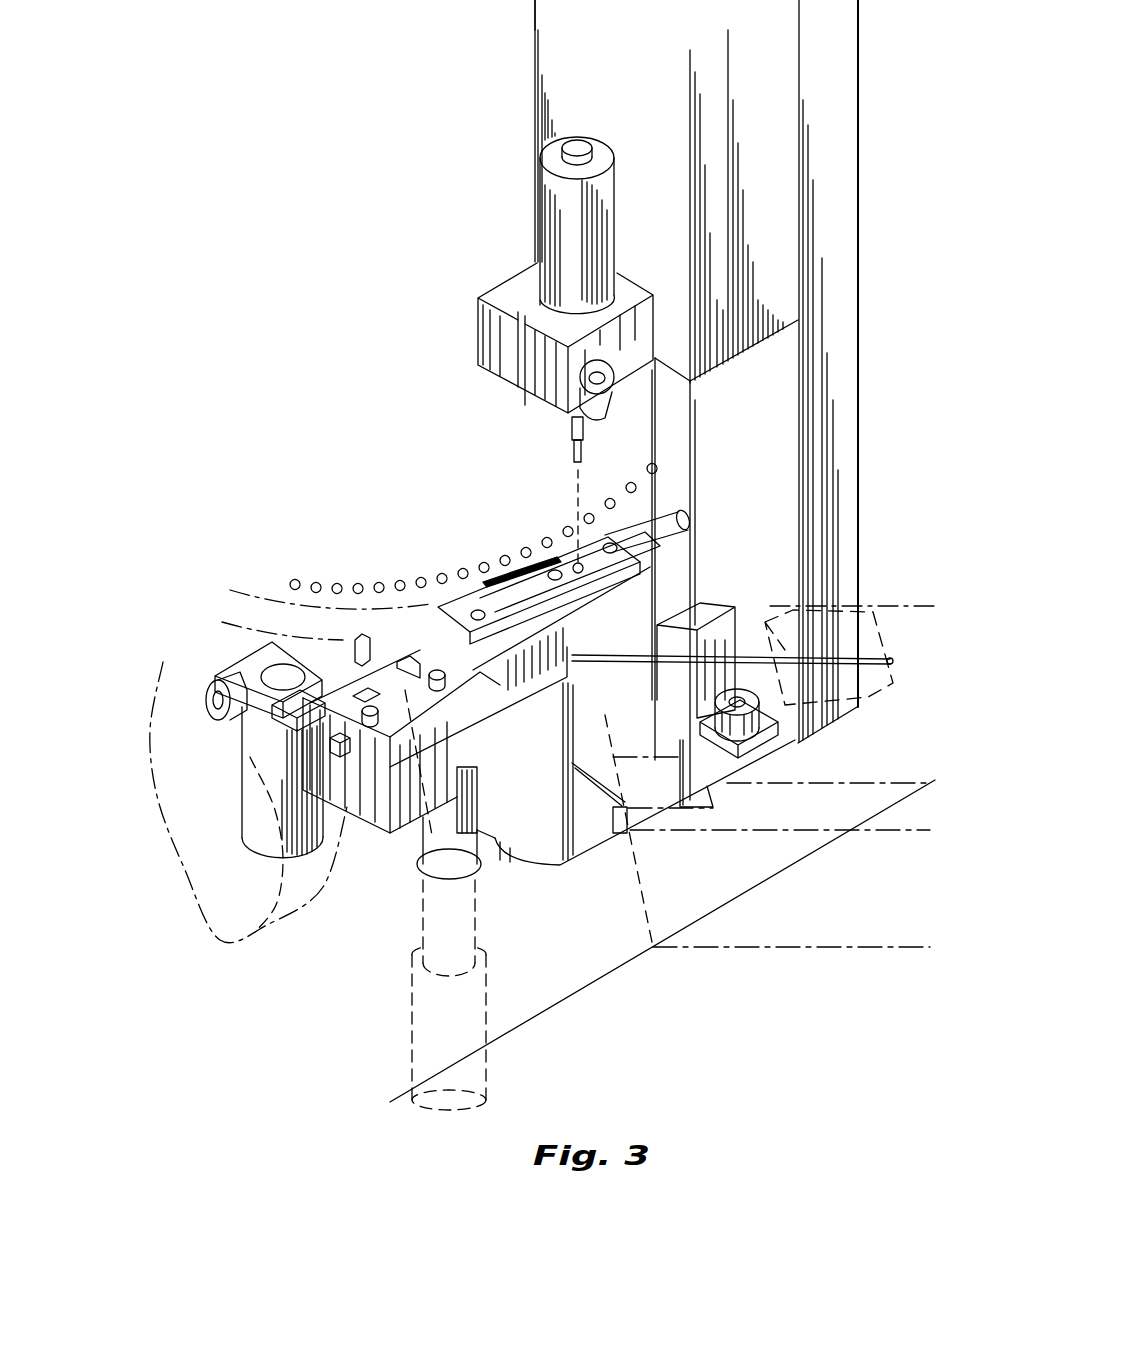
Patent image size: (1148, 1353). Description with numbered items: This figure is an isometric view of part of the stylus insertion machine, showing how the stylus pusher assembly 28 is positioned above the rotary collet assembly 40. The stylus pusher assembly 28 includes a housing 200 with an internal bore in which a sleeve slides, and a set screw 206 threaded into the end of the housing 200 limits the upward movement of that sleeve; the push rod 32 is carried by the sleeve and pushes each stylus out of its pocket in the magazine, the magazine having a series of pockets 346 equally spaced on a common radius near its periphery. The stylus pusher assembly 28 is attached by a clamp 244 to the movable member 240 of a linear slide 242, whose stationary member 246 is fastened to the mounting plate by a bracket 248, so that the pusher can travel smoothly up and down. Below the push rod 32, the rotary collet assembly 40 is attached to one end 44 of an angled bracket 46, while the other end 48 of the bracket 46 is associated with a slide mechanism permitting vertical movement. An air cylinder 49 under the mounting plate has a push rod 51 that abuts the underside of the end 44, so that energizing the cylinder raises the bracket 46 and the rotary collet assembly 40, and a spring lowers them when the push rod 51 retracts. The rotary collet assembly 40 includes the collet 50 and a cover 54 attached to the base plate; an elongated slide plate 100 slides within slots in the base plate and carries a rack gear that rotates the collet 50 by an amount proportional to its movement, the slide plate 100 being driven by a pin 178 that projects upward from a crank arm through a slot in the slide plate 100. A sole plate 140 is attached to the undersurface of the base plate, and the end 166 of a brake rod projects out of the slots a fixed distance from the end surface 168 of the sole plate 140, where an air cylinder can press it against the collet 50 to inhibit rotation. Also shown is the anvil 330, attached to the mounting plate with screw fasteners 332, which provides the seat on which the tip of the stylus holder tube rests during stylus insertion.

The stylus pusher assembly 28 is at (555, 204).
The push rod 32 is at (574, 462).
The rotary collet assembly 40 is at (432, 580).
The end of angled bracket 44 is at (562, 745).
The angled bracket 46 is at (642, 786).
The other end of bracket 48 is at (575, 845).
The air cylinder 49 is at (489, 998).
The collet 50 is at (550, 598).
The push rod 51 is at (427, 838).
The cover 54 is at (480, 660).
The slide plate 100 is at (287, 733).
The sole plate 140 is at (478, 756).
The end of brake rod 166 is at (348, 756).
The end surface of sole plate 168 is at (358, 812).
The pin 178 is at (382, 640).
The housing 200 is at (613, 200).
The set screw 206 is at (577, 140).
The movable member 240 is at (632, 63).
The slide 242 is at (493, 50).
The clamp 244 is at (480, 328).
The stationary member 246 is at (782, 75).
The bracket 248 is at (848, 87).
The anvil 330 is at (733, 601).
The screw fasteners 332 is at (765, 755).
The pockets 346 is at (345, 580).